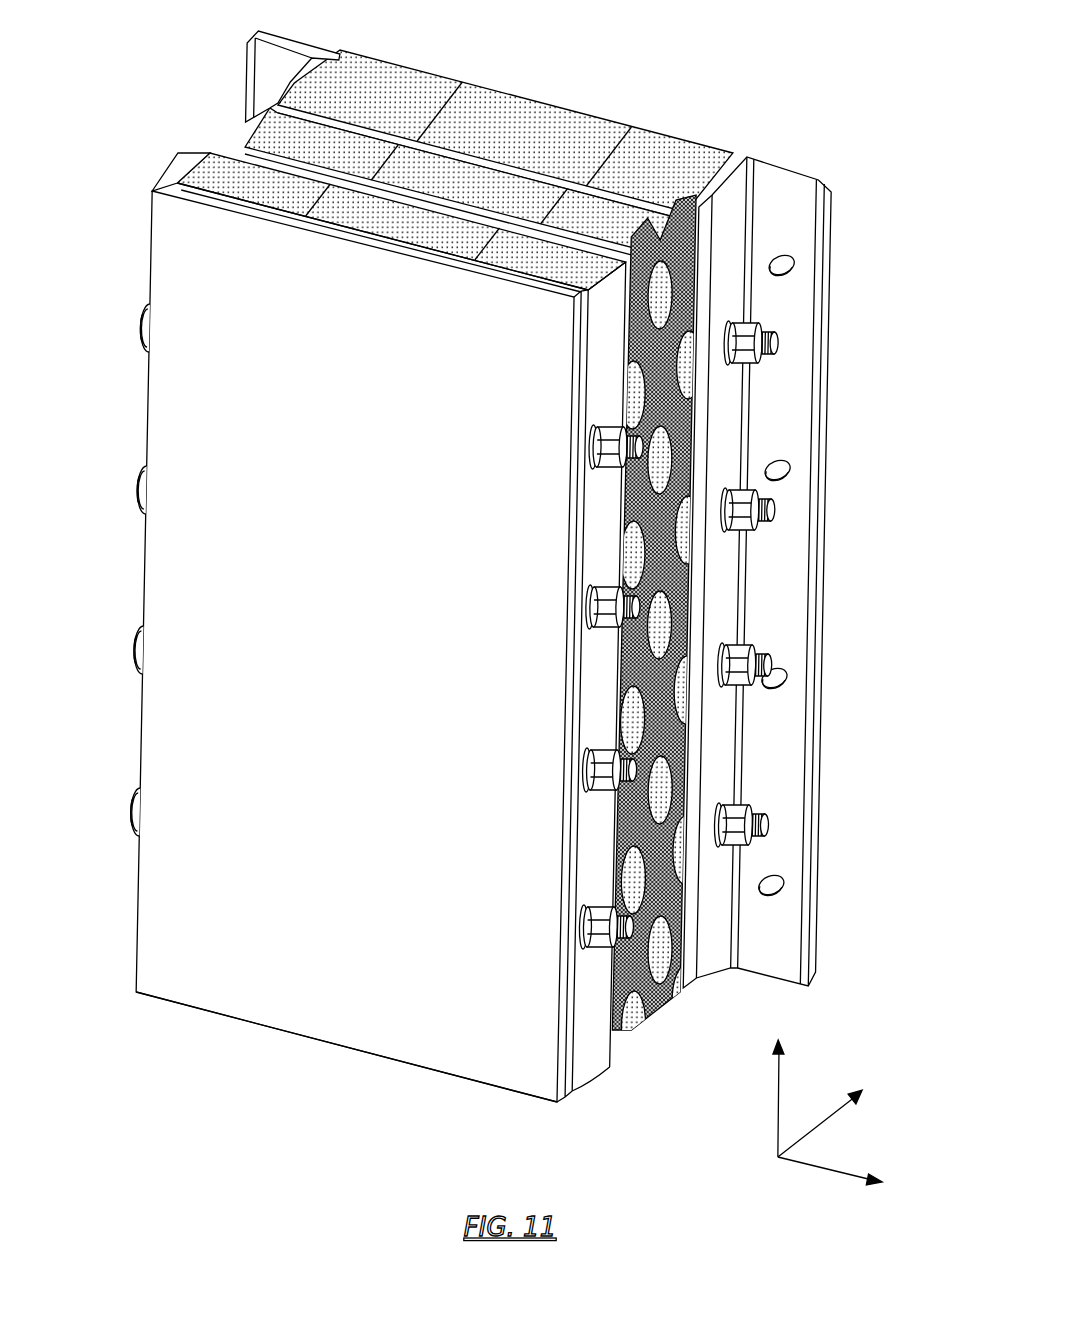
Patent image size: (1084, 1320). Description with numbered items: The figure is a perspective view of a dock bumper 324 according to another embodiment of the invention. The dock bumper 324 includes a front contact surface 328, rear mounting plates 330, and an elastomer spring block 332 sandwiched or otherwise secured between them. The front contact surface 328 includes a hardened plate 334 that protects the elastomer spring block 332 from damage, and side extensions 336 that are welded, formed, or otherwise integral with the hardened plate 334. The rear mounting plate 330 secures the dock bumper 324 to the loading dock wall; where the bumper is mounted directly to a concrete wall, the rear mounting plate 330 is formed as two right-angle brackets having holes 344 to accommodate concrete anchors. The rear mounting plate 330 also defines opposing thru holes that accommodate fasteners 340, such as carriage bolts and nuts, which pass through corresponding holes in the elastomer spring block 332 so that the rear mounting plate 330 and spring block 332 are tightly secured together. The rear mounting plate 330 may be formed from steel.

The dock bumper 324 is at (493, 600).
The front contact surface 328 is at (380, 642).
The rear mounting plate 330 is at (263, 62).
The elastomer spring block 332 is at (432, 94).
The hardened plate 334 is at (337, 1040).
The side extensions 336 is at (173, 173).
The fastener 340 is at (145, 485).
The holes 344 is at (796, 467).